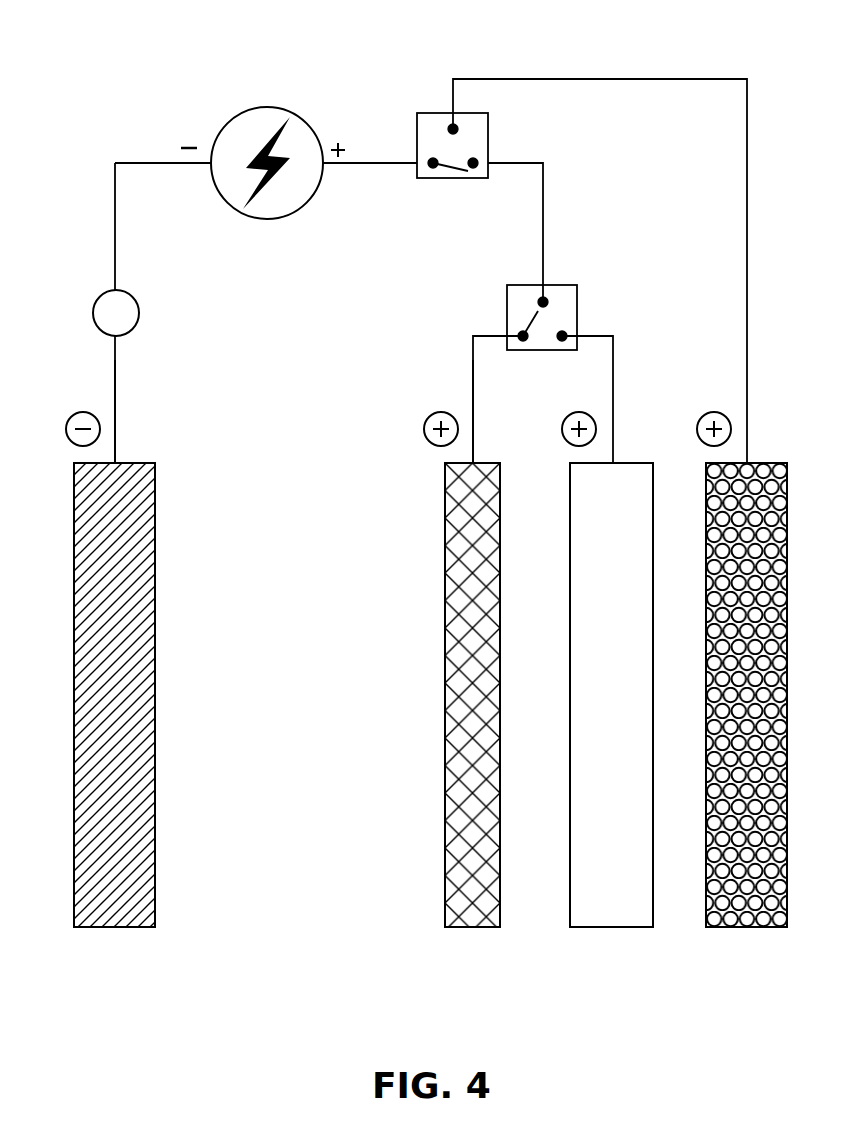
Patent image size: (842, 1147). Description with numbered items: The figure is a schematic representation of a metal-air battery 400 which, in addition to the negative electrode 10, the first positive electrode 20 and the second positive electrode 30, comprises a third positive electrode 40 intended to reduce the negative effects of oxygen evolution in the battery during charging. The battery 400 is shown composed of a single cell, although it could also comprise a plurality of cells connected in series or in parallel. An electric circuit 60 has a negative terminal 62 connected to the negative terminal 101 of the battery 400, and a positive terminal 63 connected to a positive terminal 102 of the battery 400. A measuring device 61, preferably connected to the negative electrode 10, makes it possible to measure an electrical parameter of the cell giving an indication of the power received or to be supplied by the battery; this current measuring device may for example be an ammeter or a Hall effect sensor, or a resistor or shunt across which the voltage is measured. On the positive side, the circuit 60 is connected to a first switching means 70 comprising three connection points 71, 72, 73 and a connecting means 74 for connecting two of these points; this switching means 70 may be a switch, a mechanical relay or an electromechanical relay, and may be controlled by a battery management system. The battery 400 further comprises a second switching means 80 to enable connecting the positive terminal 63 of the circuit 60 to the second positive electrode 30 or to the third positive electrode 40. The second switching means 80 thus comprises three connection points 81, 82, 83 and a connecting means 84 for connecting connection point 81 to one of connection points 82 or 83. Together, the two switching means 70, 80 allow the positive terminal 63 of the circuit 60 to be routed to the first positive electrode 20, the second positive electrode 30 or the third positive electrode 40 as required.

The negative electrode 10 is at (96, 914).
The first positive electrode 20 is at (755, 912).
The second positive electrode 30 is at (630, 912).
The third positive electrode 40 is at (480, 914).
The electric circuit 60 is at (251, 105).
The measuring device 61 is at (93, 300).
The negative terminal 62 is at (190, 134).
The positive terminal 63 is at (338, 134).
The first switching means 70 is at (505, 143).
The connection point 71 is at (432, 172).
The connection point 72 is at (452, 124).
The connection point 73 is at (474, 172).
The connecting means 74 is at (456, 157).
The second switching means 80 is at (598, 300).
The connection point 81 is at (550, 290).
The connection point 82 is at (566, 334).
The connection point 83 is at (520, 334).
The connecting means 84 is at (525, 312).
The negative terminal 101 is at (131, 420).
The positive terminal 102 is at (452, 392).
The metal-air battery 400 is at (177, 1008).